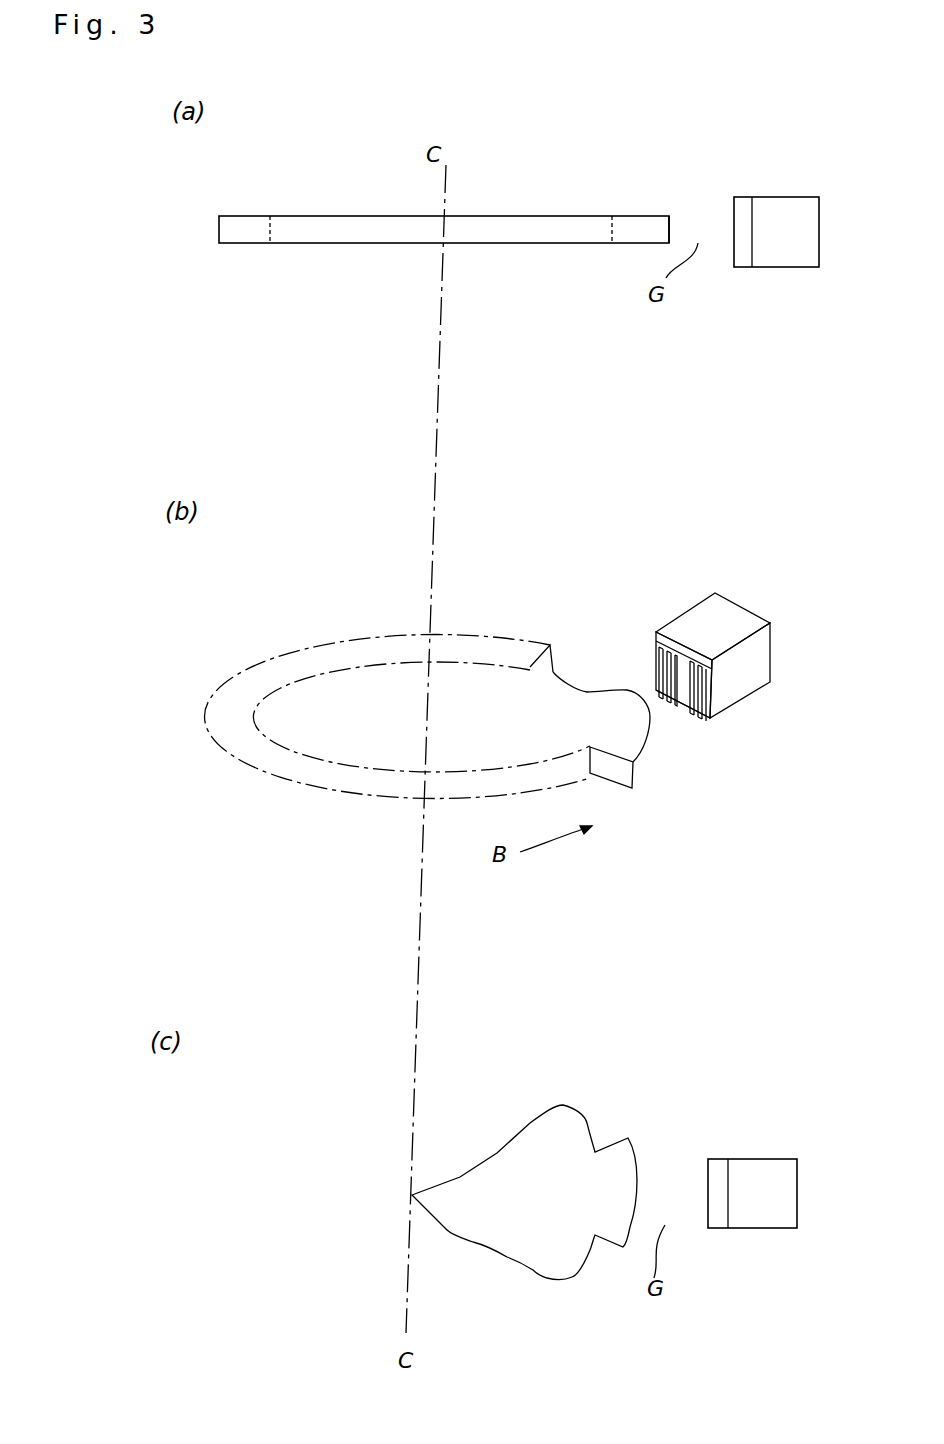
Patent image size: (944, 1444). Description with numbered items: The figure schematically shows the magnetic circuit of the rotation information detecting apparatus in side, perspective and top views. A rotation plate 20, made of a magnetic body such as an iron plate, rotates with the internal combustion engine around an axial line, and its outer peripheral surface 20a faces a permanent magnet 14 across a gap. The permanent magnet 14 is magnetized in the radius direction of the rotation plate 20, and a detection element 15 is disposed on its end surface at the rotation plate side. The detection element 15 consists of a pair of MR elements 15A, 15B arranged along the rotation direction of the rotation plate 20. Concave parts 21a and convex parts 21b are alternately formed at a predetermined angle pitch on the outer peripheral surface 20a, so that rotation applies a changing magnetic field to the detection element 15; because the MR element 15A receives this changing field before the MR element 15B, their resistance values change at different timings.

The rotation plate 20 is at (345, 216).
The outer peripheral surface 20a is at (675, 232).
The permanent magnet 14 is at (812, 200).
The detection element 15 is at (745, 200).
The MR element 15A is at (718, 695).
The MR element 15B is at (658, 648).
The concave part 21a is at (578, 684).
The convex part 21b is at (640, 762).